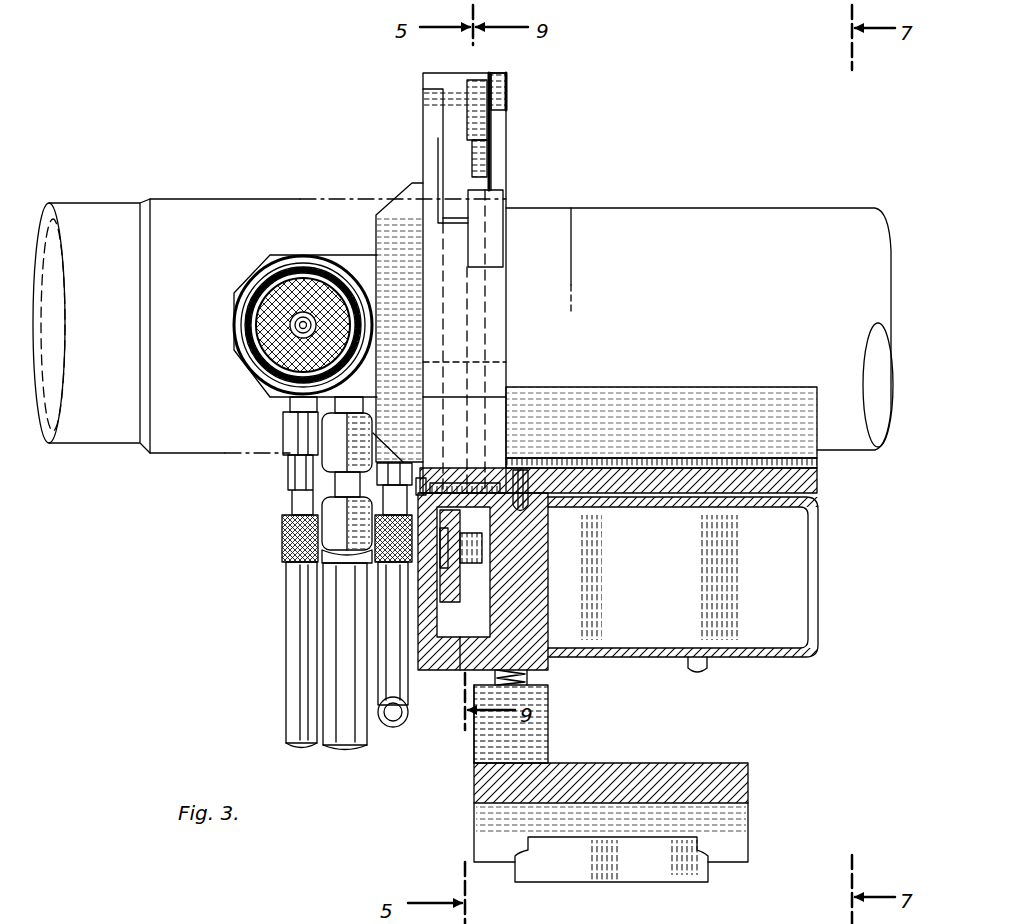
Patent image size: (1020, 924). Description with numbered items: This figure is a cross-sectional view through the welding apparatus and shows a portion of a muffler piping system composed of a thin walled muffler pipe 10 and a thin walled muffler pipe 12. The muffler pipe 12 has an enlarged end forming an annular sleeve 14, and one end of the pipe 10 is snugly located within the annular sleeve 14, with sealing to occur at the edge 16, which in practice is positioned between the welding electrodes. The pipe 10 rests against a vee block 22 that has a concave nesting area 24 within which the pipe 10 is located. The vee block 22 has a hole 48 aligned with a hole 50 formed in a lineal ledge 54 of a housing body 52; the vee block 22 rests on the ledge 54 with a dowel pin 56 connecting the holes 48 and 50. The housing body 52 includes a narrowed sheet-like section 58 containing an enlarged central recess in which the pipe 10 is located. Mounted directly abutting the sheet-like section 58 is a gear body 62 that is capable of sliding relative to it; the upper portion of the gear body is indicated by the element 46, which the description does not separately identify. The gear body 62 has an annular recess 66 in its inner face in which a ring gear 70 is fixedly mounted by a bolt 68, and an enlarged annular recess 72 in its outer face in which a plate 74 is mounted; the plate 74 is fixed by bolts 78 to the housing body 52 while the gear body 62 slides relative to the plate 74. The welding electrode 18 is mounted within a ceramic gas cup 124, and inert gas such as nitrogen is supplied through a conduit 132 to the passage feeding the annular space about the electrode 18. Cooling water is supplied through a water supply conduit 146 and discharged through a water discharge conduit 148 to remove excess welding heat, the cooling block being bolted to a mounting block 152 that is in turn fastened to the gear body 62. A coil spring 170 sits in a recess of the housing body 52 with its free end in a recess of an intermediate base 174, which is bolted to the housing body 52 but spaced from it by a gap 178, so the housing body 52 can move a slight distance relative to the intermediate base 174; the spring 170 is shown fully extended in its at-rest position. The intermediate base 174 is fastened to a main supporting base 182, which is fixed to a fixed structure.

The muffler pipe 10 is at (686, 208).
The muffler pipe 12 is at (108, 212).
The annular sleeve 14 is at (300, 199).
The edge 16 is at (573, 240).
The welding electrode 18 is at (272, 280).
The vee block 22 is at (760, 478).
The concave nesting area 24 is at (770, 500).
The column top 46 is at (512, 96).
The hole 48 is at (556, 515).
The hole 50 is at (500, 560).
The housing body 52 is at (522, 640).
The lineal ledge 54 is at (548, 538).
The dowel pin 56 is at (522, 468).
The sheet-like section 58 is at (508, 160).
The gear body 62 is at (456, 73).
The annular recess 66 is at (455, 618).
The bolt 68 is at (415, 560).
The ring gear 70 is at (435, 598).
The enlarged annular recess 72 is at (466, 118).
The plate 74 is at (438, 150).
The bolts 78 is at (380, 472).
The ceramic gas cup 124 is at (240, 315).
The conduit 132 is at (346, 726).
The water supply conduit 146 is at (300, 618).
The water discharge conduit 148 is at (396, 728).
The mounting block 152 is at (412, 190).
The coil spring 170 is at (528, 687).
The intermediate base 174 is at (512, 745).
The gap 178 is at (540, 678).
The main supporting base 182 is at (660, 765).